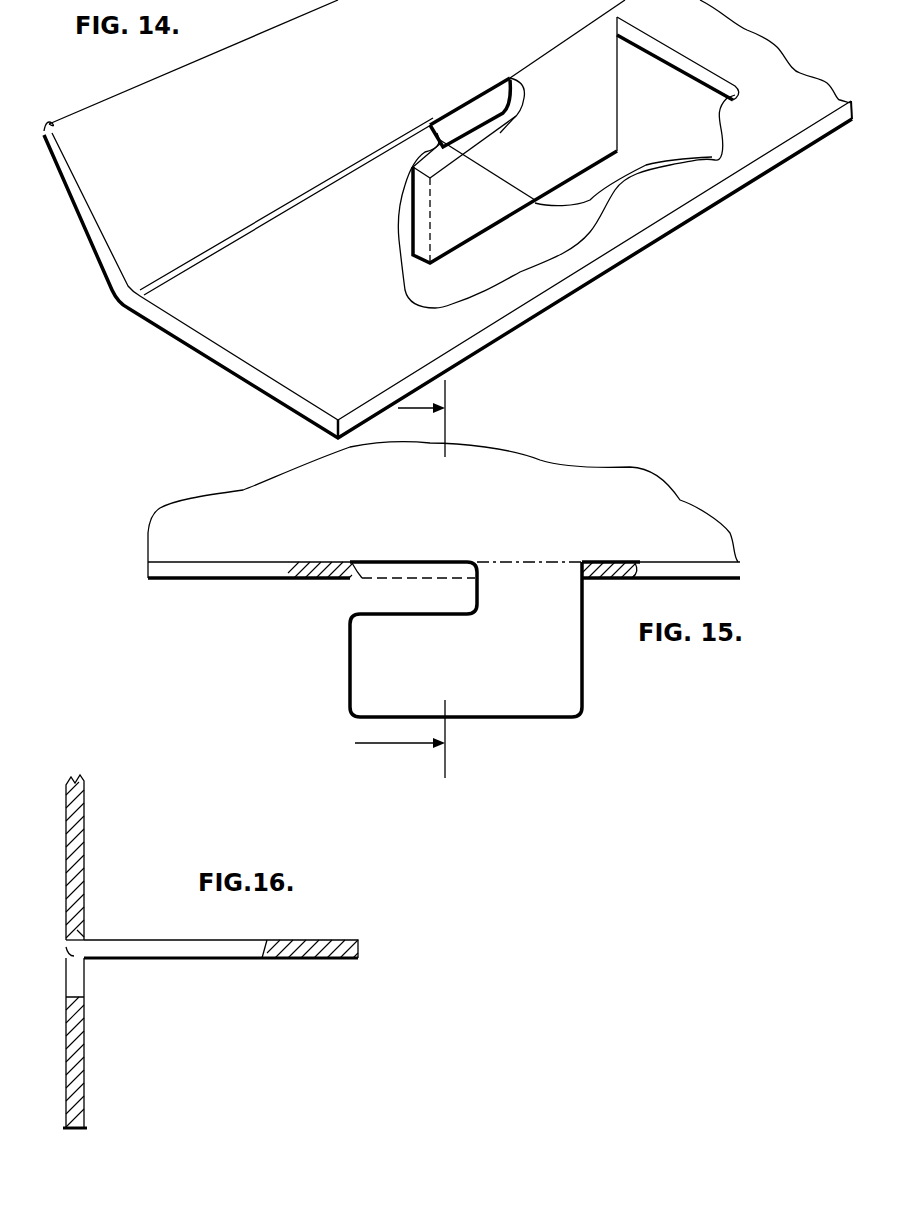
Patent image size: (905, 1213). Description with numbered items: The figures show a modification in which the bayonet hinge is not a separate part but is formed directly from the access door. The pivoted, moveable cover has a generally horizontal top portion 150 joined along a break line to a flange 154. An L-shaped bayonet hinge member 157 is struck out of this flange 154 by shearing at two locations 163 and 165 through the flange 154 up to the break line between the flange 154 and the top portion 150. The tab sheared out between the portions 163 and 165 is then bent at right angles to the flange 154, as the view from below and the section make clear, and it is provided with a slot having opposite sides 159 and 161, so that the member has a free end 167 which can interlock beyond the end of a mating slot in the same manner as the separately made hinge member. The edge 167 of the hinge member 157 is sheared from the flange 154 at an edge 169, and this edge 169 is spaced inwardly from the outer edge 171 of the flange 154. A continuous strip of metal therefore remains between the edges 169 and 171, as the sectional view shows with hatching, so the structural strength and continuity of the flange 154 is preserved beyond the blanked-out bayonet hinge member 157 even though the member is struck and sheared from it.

In FIG. 14, the top cover portion 150 is at (237, 178).
In FIG. 15, the top cover portion 150 is at (578, 466).
In FIG. 16, the top cover portion 150 is at (85, 838).
In FIG. 14, the flange 154 is at (314, 332).
In FIG. 14, the bayonet hinge member 157 is at (530, 200).
In FIG. 15, the bayonet hinge member 157 is at (540, 700).
In FIG. 16, the bayonet hinge member 157 is at (83, 1103).
In FIG. 14, the slot side 159 is at (463, 105).
In FIG. 15, the slot side 159 is at (437, 558).
In FIG. 16, the slot side 159 is at (85, 933).
In FIG. 14, the slot side 161 is at (455, 167).
In FIG. 15, the slot side 161 is at (430, 616).
In FIG. 16, the slot side 161 is at (83, 1025).
In FIG. 14, the shear location 163 is at (700, 80).
In FIG. 15, the shear location 163 is at (603, 563).
In FIG. 15, the shear location 165 is at (368, 562).
In FIG. 14, the free end 167 is at (505, 220).
In FIG. 16, the free end 167 is at (77, 1130).
In FIG. 14, the sheared edge 169 is at (735, 105).
In FIG. 16, the sheared edge 169 is at (267, 947).
In FIG. 14, the outer edge of flange 171 is at (512, 330).
In FIG. 16, the outer edge of flange 171 is at (358, 944).